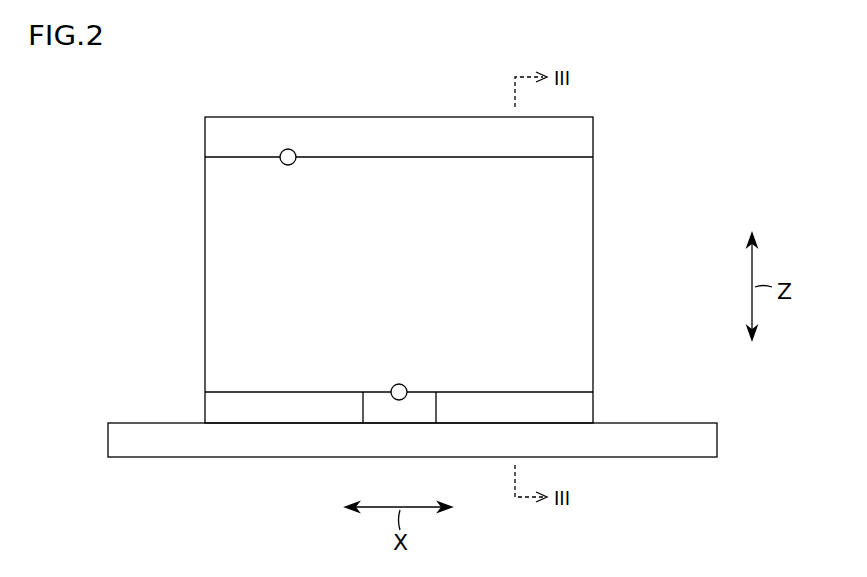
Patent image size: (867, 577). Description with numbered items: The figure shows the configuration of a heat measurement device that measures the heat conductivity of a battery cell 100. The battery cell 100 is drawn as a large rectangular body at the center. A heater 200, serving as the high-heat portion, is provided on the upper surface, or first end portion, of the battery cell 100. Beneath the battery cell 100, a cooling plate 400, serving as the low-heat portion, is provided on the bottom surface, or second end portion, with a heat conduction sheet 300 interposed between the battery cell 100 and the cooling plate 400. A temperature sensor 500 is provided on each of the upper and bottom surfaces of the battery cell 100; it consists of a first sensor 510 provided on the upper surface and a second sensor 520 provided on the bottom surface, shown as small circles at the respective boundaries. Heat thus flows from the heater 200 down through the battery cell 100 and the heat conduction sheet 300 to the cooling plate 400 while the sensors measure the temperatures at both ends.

The battery cell 100 is at (582, 278).
The heater 200 is at (582, 138).
The heat conduction sheet 300 is at (582, 407).
The cooling plate 400 is at (710, 440).
The temperature sensor 500 is at (248, 274).
The first sensor 510 is at (282, 163).
The second sensor 520 is at (393, 386).